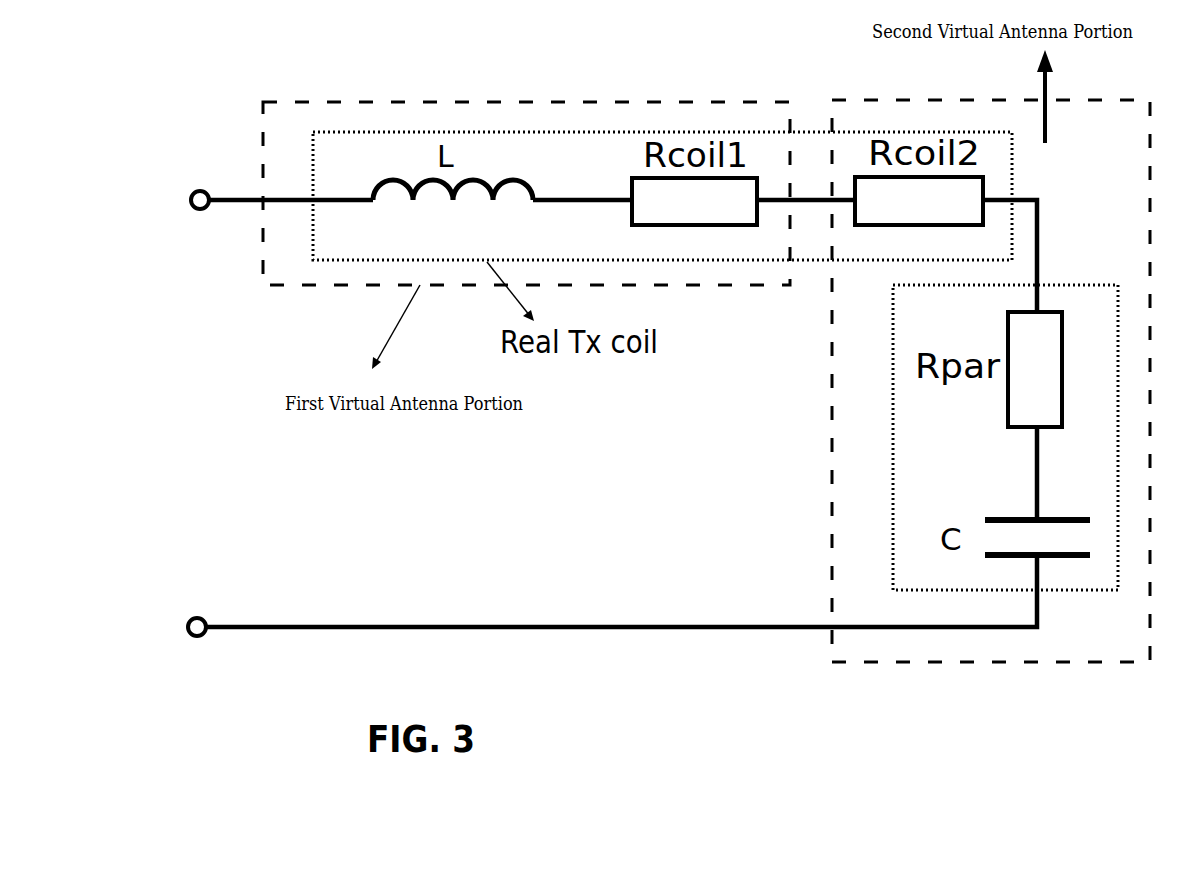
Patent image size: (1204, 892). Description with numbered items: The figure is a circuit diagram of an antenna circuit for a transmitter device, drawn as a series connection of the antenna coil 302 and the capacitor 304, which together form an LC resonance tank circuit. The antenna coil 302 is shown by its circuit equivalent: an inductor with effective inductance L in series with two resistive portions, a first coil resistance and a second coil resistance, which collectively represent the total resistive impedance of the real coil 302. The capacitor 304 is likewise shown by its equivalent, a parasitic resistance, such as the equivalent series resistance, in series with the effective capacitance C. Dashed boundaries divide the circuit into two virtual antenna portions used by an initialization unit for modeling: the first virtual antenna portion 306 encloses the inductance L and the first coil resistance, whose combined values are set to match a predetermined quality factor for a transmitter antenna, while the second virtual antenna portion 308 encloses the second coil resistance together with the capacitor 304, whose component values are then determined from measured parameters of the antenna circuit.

The antenna coil 302 is at (548, 136).
The capacitor 304 is at (1052, 282).
The first virtual antenna portion 306 is at (681, 99).
The second virtual antenna portion 308 is at (1128, 99).